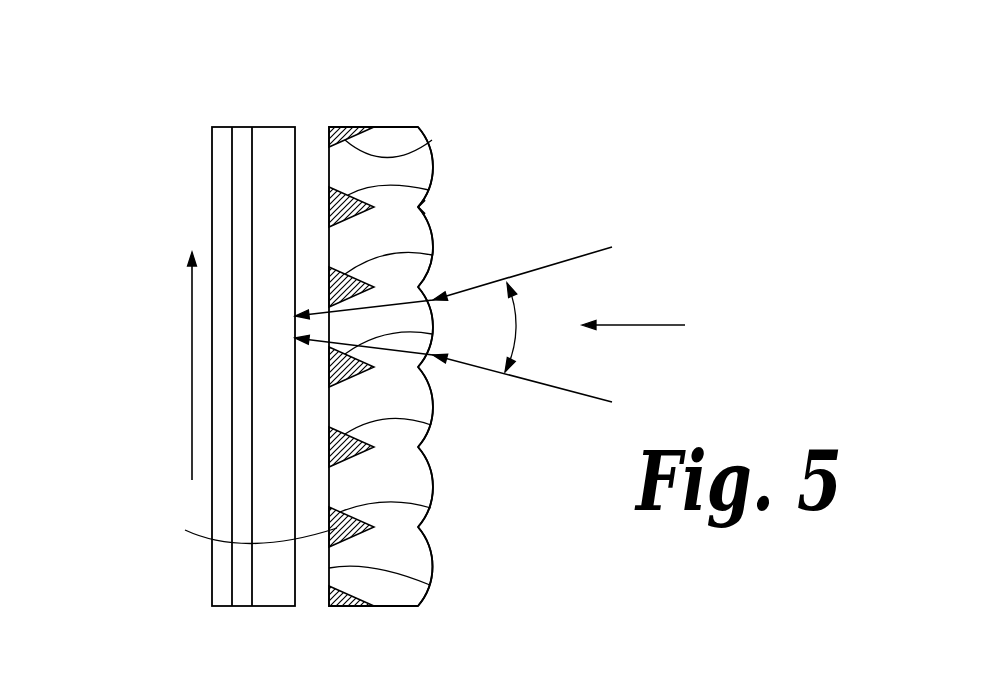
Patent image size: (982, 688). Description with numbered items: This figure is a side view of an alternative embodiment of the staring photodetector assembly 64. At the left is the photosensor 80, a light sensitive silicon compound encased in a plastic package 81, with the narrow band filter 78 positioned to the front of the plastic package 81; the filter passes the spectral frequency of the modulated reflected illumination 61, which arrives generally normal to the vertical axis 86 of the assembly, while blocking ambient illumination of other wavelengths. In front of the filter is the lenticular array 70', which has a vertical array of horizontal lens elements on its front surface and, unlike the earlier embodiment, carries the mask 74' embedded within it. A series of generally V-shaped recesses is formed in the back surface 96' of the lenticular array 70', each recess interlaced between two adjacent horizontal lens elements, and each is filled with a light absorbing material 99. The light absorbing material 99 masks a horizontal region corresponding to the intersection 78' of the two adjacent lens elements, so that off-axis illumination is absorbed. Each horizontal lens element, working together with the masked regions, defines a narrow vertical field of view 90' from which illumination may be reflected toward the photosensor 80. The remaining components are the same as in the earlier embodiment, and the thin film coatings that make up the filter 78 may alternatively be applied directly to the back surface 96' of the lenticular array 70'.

The modulated reflected illumination 61 is at (655, 325).
The staring photodetector assembly 64 is at (397, 87).
The lenticular array 70' is at (404, 337).
The mask 74' is at (339, 93).
The narrow band filter 78 is at (253, 325).
The intersection of two adjacent horizontal lens elements 78' is at (492, 203).
The photosensor 80 is at (233, 140).
The plastic package 81 is at (218, 150).
The vertical axis 86 is at (192, 322).
The narrow vertical field of view 90' is at (562, 323).
The back surface of lenticular array 96' is at (412, 590).
The light absorbing material 99 is at (248, 528).